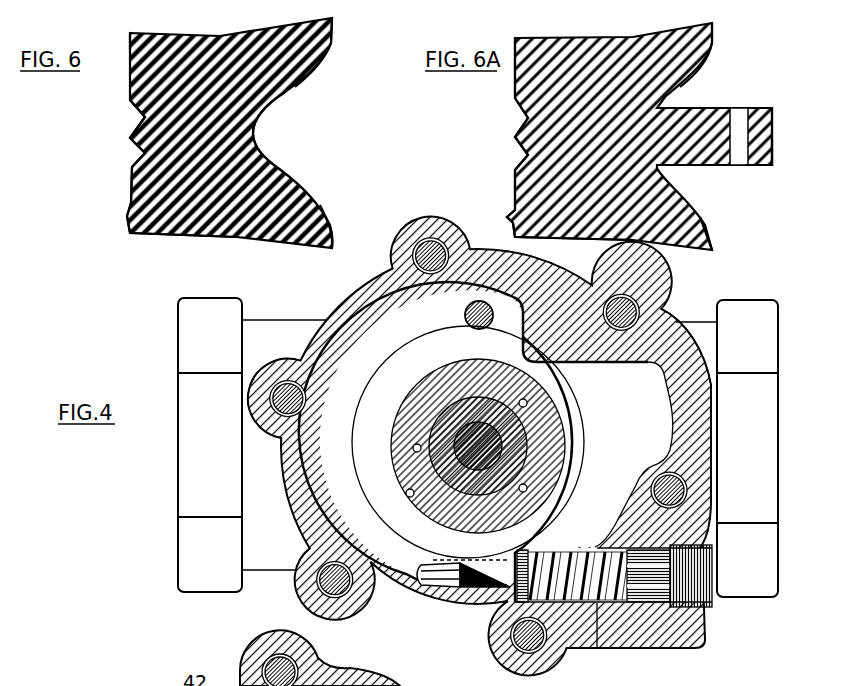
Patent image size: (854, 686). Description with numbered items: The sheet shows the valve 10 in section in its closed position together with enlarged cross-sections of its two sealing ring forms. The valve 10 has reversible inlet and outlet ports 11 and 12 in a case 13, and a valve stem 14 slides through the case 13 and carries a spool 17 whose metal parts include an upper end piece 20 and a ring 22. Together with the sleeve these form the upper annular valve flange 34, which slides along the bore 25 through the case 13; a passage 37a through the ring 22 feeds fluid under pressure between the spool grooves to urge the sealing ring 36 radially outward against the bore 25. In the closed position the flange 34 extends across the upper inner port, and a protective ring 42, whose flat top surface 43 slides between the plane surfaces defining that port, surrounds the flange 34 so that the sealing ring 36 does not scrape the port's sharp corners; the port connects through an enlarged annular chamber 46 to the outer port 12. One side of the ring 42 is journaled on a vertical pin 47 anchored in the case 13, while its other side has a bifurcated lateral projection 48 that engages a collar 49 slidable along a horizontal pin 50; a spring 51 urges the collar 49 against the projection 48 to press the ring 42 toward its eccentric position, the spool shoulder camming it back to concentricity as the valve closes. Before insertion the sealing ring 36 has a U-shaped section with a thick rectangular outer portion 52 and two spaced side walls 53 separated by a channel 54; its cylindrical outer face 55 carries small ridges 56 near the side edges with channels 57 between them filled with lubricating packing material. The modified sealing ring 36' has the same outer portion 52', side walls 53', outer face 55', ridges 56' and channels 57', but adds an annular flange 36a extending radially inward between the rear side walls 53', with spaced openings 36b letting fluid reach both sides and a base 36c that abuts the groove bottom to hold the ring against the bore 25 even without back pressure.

In FIG. 4, the valve 10 is at (177, 403).
In FIG. 4, the port 11 is at (178, 468).
In FIG. 4, the port 12 is at (783, 437).
In FIG. 4, the case 13 is at (665, 320).
In FIG. 4, the valve stem 14 is at (433, 403).
In FIG. 4, the spool 17 is at (410, 437).
In FIG. 4, the upper end piece 20 is at (463, 430).
In FIG. 4, the ring 22 is at (460, 427).
In FIG. 4, the bore 25 is at (407, 492).
In FIG. 4, the upper annular valve flange 34 is at (363, 472).
In FIG. 4, the passage 37a is at (415, 445).
In FIG. 4, the protective ring 42 is at (500, 347).
In FIG. 4, the top surface 43 is at (363, 472).
In FIG. 4, the enlarged annular chamber 46 is at (290, 445).
In FIG. 4, the vertical pin 47 is at (470, 305).
In FIG. 4, the lateral projection 48 is at (500, 587).
In FIG. 4, the collar 49 is at (513, 592).
In FIG. 4, the horizontal pin 50 is at (440, 588).
In FIG. 4, the spring 51 is at (640, 605).
In FIG. 6, the sealing ring 36 is at (189, 133).
In FIG. 6, the outer portion 52 is at (183, 249).
In FIG. 6, the side walls 53 is at (342, 133).
In FIG. 6, the channel 54 is at (258, 132).
In FIG. 6, the outer face 55 is at (105, 185).
In FIG. 6, the ridges 56 is at (95, 127).
In FIG. 6, the channels 57 is at (112, 133).
In FIG. 6A, the sealing ring 36' is at (603, 136).
In FIG. 6A, the annular flange 36a is at (690, 108).
In FIG. 6A, the openings 36b is at (740, 117).
In FIG. 6A, the base 36c is at (777, 150).
In FIG. 6A, the outer portion 52' is at (574, 125).
In FIG. 6A, the side walls 53' is at (729, 136).
In FIG. 6A, the outer face 55' is at (487, 186).
In FIG. 6A, the ridges 56' is at (486, 129).
In FIG. 6A, the channels 57' is at (491, 134).